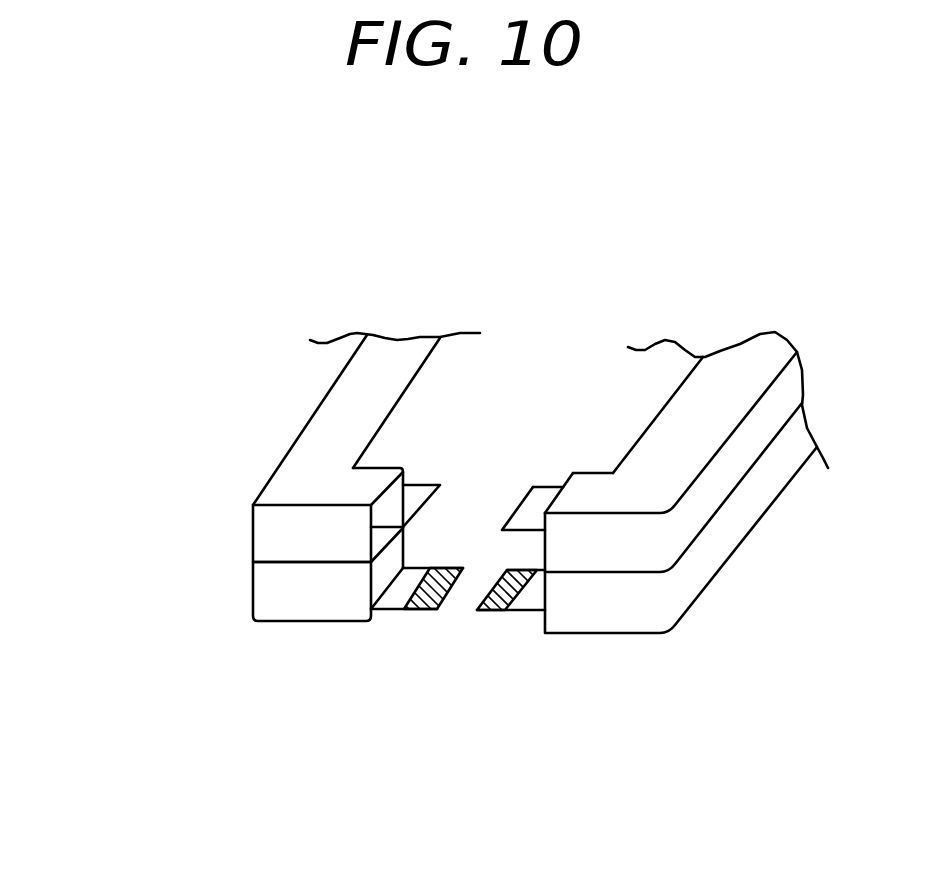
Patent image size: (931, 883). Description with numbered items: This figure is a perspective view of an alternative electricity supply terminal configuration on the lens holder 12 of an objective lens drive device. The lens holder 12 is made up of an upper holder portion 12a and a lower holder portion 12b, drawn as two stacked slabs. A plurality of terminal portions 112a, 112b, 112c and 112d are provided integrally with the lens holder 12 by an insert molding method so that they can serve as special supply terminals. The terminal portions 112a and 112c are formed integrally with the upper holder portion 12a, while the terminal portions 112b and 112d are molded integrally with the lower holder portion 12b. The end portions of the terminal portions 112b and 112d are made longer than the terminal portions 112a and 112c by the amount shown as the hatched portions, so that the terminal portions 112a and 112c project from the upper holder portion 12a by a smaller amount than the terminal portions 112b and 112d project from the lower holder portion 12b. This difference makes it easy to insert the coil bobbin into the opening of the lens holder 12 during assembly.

The lens holder 12 is at (282, 552).
The upper holder portion 12a is at (255, 542).
The lower holder portion 12b is at (252, 614).
The terminal portion 112a is at (453, 445).
The terminal portion 112b is at (391, 669).
The terminal portion 112c is at (557, 409).
The terminal portion 112d is at (559, 673).